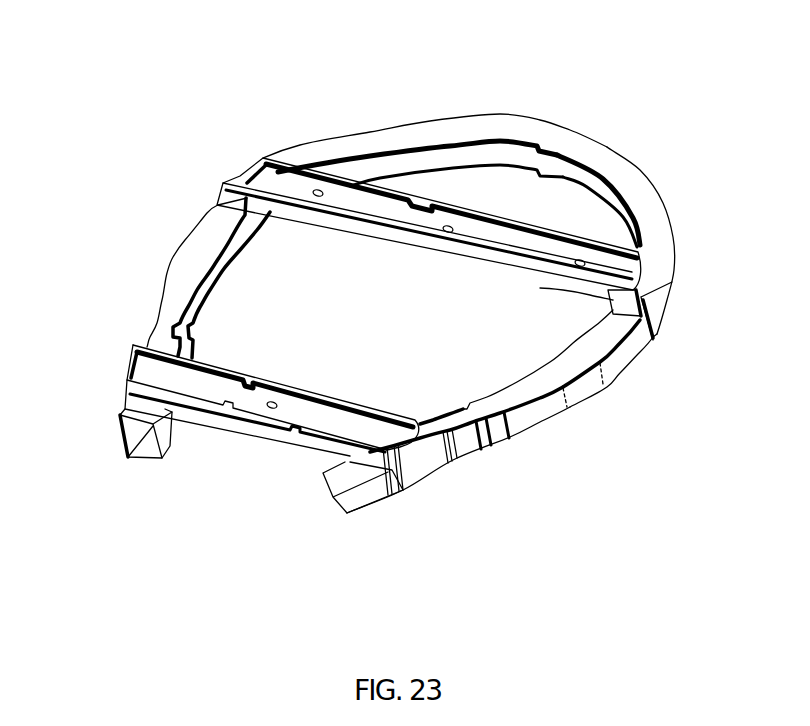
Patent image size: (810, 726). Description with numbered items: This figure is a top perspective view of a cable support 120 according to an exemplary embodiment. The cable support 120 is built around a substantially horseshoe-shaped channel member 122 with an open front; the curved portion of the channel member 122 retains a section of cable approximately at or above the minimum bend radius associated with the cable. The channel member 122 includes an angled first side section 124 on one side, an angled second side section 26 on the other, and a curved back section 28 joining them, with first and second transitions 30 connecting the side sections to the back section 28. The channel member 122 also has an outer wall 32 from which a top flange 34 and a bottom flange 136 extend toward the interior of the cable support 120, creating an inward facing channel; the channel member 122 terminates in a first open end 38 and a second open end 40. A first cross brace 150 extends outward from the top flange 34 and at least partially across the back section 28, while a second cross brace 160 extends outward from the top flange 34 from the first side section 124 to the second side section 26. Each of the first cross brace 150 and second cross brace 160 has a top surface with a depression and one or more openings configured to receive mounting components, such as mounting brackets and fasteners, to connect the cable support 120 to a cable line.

The cable support 120 is at (110, 127).
The channel member 122 is at (408, 127).
The first side section 124 is at (163, 312).
The bottom flange 136 is at (463, 155).
The first cross brace 150 is at (280, 160).
The second cross brace 160 is at (131, 368).
The outer ring wall 28 is at (612, 146).
The ring top surface 34 is at (653, 207).
The front clamp segment 26 is at (530, 417).
The ring segment 30 is at (597, 390).
The ring wall end 32 is at (641, 345).
The left leg 38 is at (147, 450).
The right leg 40 is at (333, 495).